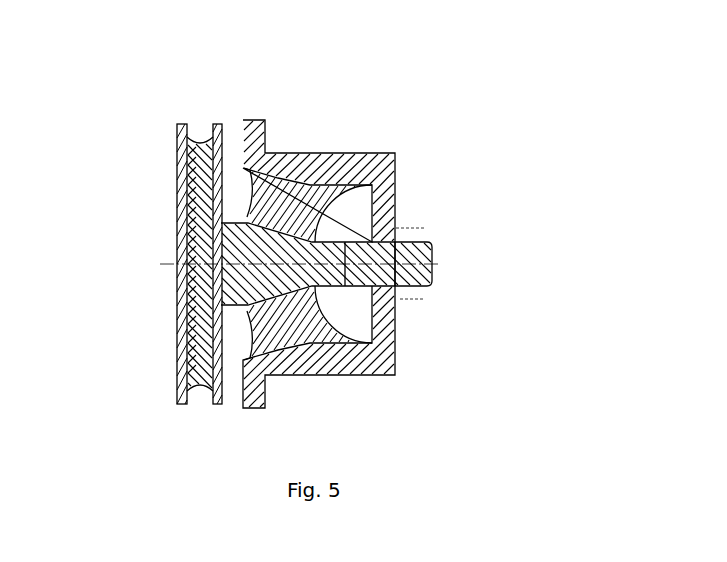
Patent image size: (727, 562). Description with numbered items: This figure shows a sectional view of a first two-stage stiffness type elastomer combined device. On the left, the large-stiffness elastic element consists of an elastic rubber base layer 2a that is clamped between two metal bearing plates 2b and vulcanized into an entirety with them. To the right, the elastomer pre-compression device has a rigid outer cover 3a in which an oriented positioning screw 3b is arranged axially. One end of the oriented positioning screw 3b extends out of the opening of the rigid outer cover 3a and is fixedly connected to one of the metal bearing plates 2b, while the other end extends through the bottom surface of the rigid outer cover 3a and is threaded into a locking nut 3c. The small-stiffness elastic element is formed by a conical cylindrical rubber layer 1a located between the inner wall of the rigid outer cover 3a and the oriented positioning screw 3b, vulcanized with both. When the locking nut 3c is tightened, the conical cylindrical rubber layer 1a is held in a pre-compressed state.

The conical cylindrical rubber layer 1a is at (280, 190).
The elastic rubber base layer 2a is at (200, 373).
The metal bearing plate 2b is at (215, 128).
The rigid outer cover 3a is at (382, 327).
The oriented positioning screw 3b is at (432, 244).
The locking nut 3c is at (412, 292).